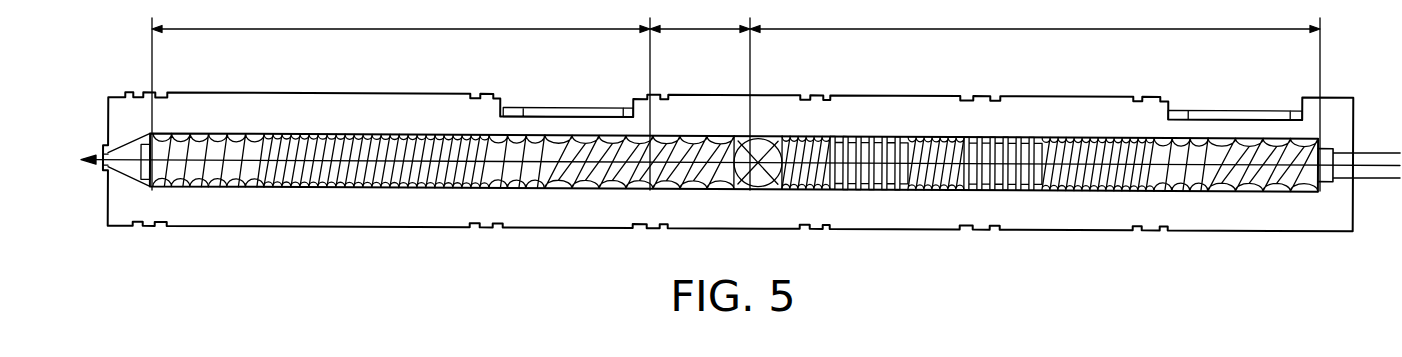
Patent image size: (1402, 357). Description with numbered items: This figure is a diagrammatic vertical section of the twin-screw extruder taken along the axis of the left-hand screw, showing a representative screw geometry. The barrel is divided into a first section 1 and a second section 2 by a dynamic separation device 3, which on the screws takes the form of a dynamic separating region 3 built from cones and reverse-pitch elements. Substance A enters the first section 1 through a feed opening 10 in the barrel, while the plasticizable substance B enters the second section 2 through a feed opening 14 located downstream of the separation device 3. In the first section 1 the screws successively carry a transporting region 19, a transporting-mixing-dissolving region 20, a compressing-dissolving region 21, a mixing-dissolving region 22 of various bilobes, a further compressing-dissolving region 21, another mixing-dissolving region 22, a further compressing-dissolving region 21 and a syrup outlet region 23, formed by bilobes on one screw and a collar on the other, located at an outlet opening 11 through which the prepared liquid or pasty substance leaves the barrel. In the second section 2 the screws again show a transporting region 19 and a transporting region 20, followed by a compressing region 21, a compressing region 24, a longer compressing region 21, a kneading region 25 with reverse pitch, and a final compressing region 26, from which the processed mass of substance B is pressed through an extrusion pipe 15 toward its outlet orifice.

The first section 1 is at (1035, 98).
The second section 2 is at (401, 97).
The dynamic separation device 3 is at (700, 97).
The feed opening 10 is at (1262, 108).
The outlet opening 11 is at (765, 142).
The feed opening 14 is at (590, 108).
The extrusion pipe 15 is at (105, 150).
The transporting region 19 is at (617, 189).
The transporting-mixing-dissolving region 20 is at (524, 189).
The compressing-dissolving region 21 is at (352, 189).
The mixing-dissolving region 22 is at (854, 189).
The syrup outlet region 23 is at (754, 189).
The compressing region 24 is at (415, 189).
The kneading region 25 is at (244, 189).
The compressing region 26 is at (188, 189).